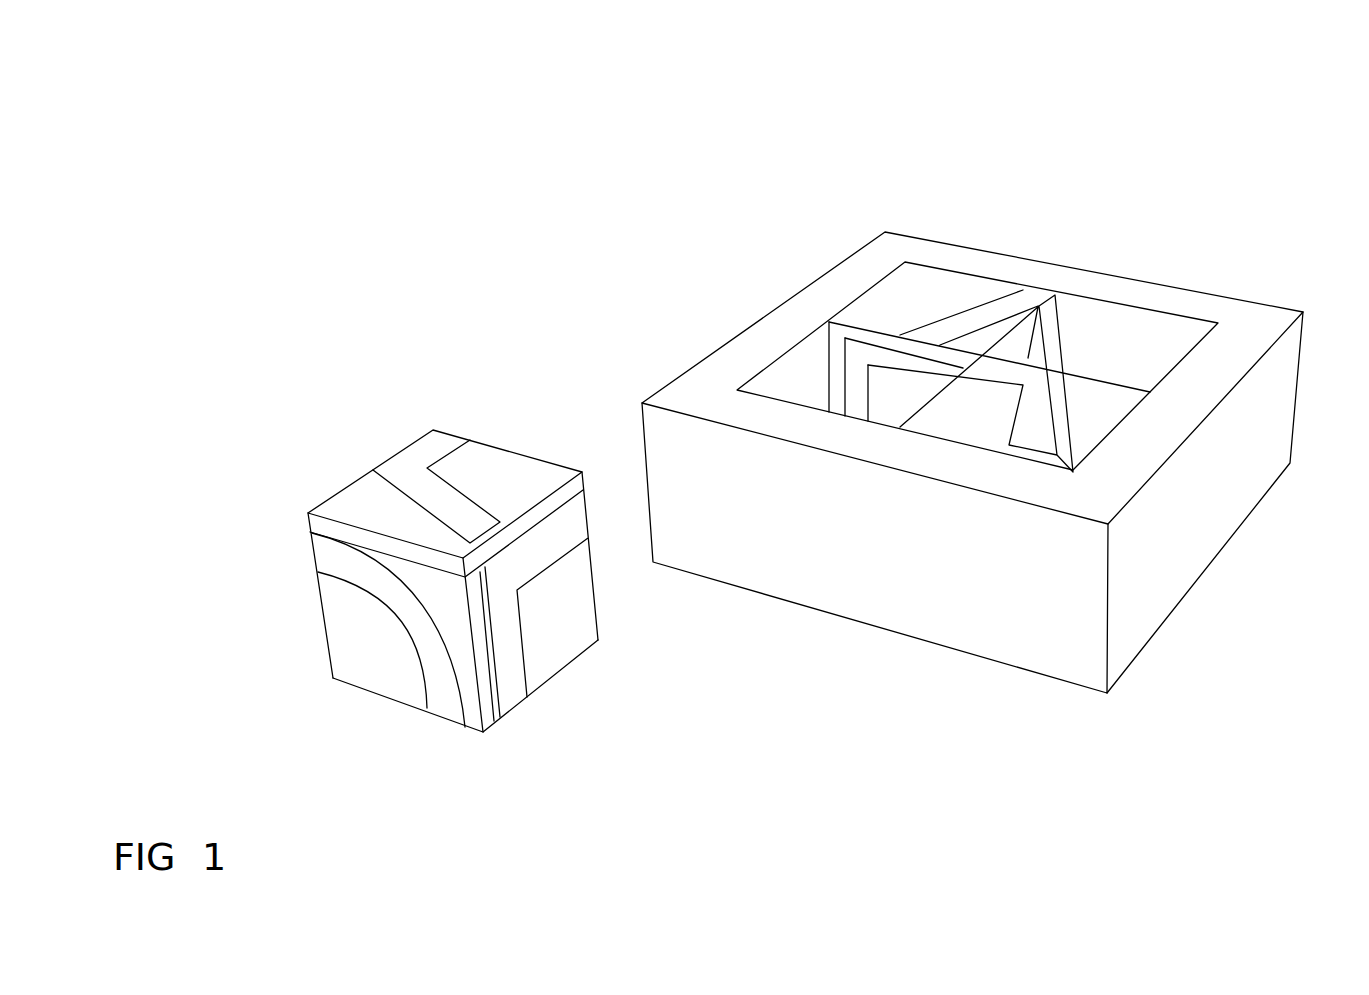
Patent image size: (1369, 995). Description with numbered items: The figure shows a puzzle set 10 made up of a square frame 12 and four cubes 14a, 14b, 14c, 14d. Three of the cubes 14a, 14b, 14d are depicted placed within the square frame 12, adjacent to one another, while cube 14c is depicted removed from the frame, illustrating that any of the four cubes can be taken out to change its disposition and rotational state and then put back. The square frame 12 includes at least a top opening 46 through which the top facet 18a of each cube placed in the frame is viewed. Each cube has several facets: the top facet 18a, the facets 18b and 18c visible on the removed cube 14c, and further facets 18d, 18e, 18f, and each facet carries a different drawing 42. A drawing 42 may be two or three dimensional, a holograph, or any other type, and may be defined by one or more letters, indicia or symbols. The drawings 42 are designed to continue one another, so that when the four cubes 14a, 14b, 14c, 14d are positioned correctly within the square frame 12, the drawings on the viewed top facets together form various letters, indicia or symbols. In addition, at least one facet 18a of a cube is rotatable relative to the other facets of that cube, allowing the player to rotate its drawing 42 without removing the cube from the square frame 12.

The puzzle set 10 is at (504, 72).
The square frame 12 is at (1135, 455).
The cube 14a is at (905, 300).
The cube 14b is at (1117, 330).
The cube 14c is at (383, 492).
The cube 14d is at (1087, 423).
The top facet 18a is at (507, 482).
The facet 18b is at (353, 639).
The facet 18c is at (570, 622).
The front edge strip of key block 18d is at (601, 564).
The curved features on key block face 18e is at (307, 593).
The bottom of key block 18f is at (417, 710).
The drawing 42 is at (407, 470).
The top opening 46 is at (812, 363).